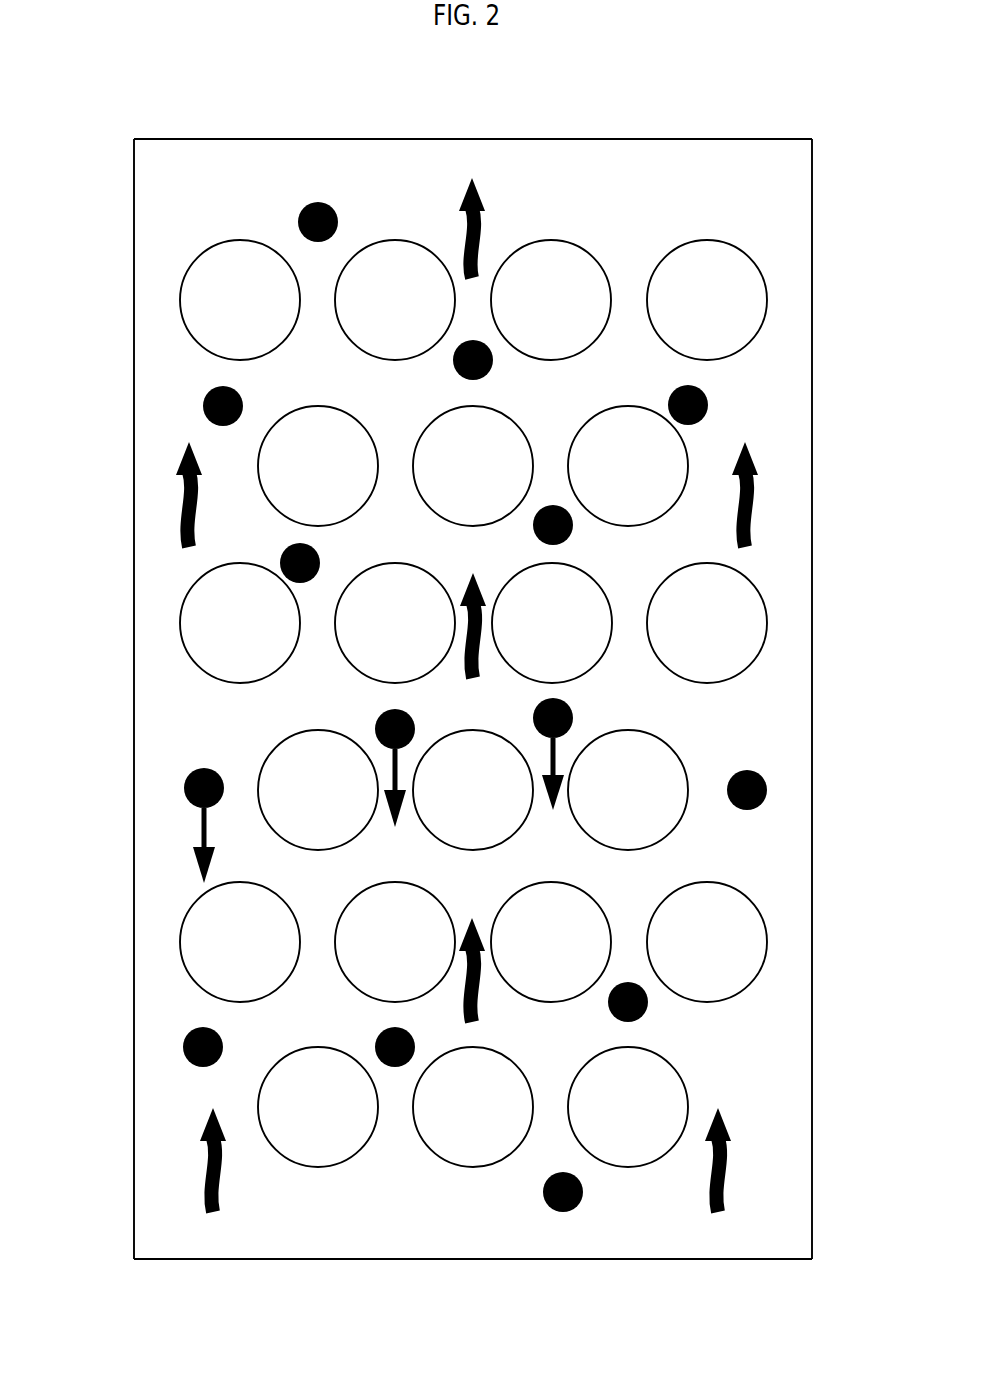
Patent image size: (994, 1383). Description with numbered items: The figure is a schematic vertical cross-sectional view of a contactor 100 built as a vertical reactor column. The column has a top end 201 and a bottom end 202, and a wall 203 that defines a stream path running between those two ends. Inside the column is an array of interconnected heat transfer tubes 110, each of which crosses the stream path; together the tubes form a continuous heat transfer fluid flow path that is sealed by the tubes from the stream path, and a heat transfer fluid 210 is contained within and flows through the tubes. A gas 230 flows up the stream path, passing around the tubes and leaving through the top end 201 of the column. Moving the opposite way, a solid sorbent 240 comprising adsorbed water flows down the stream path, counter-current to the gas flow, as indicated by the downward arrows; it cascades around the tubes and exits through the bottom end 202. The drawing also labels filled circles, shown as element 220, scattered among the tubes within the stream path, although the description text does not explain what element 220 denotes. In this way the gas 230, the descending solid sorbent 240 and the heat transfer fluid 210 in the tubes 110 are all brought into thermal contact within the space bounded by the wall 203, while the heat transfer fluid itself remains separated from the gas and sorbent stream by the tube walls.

The contactor 100 is at (122, 240).
The heat transfer tubes 110 is at (720, 242).
The top end 201 is at (388, 138).
The bottom end 202 is at (493, 1258).
The wall 203 is at (134, 660).
The heat transfer fluid 210 is at (687, 280).
The particle 220 is at (710, 410).
The gas 230 is at (485, 237).
The solid sorbent 240 is at (195, 823).